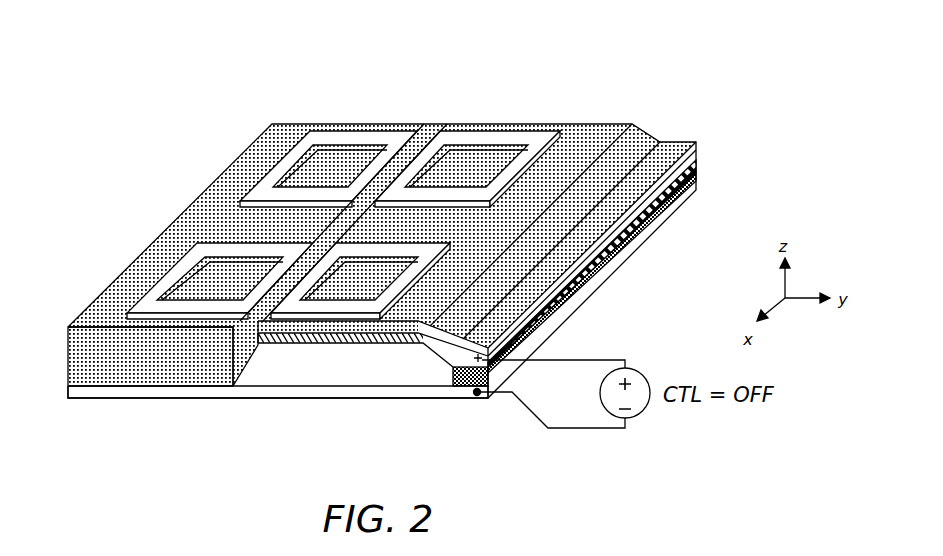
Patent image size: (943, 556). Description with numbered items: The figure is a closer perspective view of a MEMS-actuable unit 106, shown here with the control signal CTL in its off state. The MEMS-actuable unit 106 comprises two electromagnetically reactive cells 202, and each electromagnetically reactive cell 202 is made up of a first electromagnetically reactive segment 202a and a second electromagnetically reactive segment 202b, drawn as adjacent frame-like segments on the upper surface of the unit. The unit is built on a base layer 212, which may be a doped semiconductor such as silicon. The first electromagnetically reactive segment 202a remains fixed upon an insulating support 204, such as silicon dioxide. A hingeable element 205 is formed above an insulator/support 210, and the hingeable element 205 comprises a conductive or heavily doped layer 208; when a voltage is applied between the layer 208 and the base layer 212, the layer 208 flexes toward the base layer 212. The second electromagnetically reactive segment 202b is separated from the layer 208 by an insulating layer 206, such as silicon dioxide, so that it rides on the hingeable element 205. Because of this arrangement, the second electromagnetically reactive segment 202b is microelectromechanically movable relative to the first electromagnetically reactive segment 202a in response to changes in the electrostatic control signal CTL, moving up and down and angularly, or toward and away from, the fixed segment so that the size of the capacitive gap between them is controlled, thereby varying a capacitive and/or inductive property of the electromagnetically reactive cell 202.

The MEMS-actuable unit 106 is at (167, 180).
The electromagnetically reactive cell 202 is at (400, 112).
The first electromagnetically reactive segment 202a is at (375, 136).
The second electromagnetically reactive segment 202b is at (467, 138).
The insulating support 204 is at (107, 360).
The hingeable element 205 is at (637, 137).
The insulating layer 206 is at (363, 345).
The conductive layer 208 is at (318, 345).
The insulator/support 210 is at (698, 176).
The base layer 212 is at (178, 393).